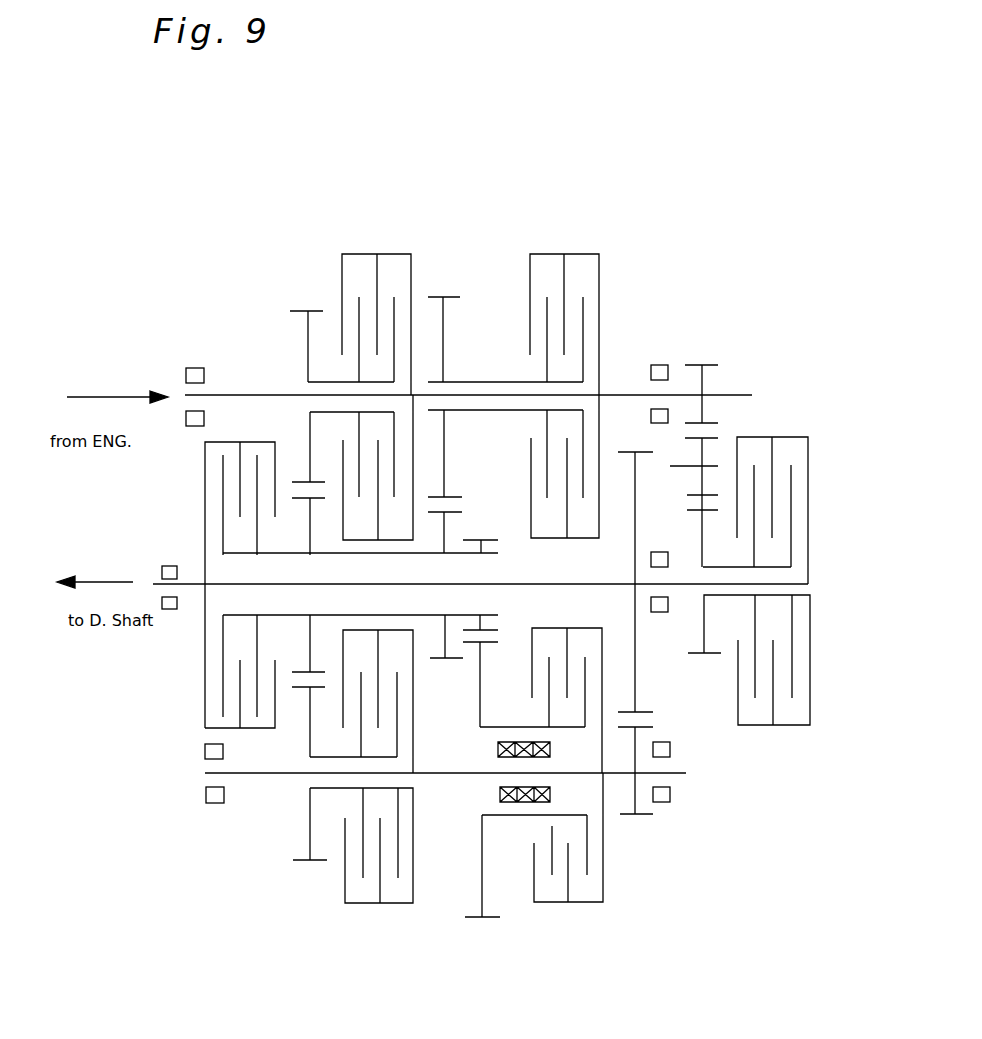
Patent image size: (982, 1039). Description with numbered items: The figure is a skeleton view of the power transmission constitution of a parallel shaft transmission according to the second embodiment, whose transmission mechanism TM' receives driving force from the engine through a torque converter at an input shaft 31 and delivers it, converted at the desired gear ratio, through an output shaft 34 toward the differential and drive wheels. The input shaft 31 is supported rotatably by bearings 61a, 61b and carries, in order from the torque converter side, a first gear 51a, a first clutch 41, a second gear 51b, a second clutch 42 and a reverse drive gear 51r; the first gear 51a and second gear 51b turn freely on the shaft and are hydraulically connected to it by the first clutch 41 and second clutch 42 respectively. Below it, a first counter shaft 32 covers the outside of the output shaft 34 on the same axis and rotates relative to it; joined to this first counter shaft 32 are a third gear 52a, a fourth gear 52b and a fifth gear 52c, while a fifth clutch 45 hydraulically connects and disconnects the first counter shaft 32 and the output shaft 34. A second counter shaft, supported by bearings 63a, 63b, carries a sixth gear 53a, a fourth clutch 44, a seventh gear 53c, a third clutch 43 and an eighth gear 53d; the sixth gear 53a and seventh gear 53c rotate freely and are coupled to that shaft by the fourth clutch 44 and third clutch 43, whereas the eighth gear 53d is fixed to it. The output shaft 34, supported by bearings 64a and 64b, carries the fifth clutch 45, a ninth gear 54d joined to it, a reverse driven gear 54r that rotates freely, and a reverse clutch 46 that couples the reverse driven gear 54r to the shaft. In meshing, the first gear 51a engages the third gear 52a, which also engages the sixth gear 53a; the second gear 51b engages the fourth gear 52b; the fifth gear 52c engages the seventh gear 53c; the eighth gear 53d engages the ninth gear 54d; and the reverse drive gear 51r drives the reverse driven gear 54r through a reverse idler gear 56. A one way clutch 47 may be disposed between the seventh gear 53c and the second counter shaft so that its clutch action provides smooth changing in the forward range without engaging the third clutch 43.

The transmission mechanism TM' is at (703, 71).
The input shaft 31 is at (232, 392).
The first counter shaft 32 is at (450, 552).
The output shaft 34 is at (192, 583).
The first clutch 41 is at (360, 254).
The second clutch 42 is at (553, 254).
The third clutch 43 is at (585, 903).
The fourth clutch 44 is at (365, 903).
The fifth clutch 45 is at (205, 710).
The reverse clutch 46 is at (800, 437).
The one way clutch 47 is at (520, 803).
The first gear 51a is at (300, 311).
The second gear 51b is at (437, 297).
The reverse drive gear 51r is at (712, 365).
The third gear 52a is at (295, 497).
The fourth gear 52b is at (437, 658).
The fifth gear 52c is at (483, 540).
The sixth gear 53a is at (300, 860).
The seventh gear 53c is at (487, 917).
The eighth gear 53d is at (642, 814).
The ninth gear 54d is at (652, 452).
The reverse driven gear 54r is at (712, 653).
The reverse idler gear 56 is at (712, 438).
The bearing 61a is at (190, 368).
The bearing 61b is at (663, 365).
The bearing 63a is at (205, 803).
The bearing 63b is at (672, 800).
The bearing 64a is at (165, 567).
The bearing 64b is at (663, 612).